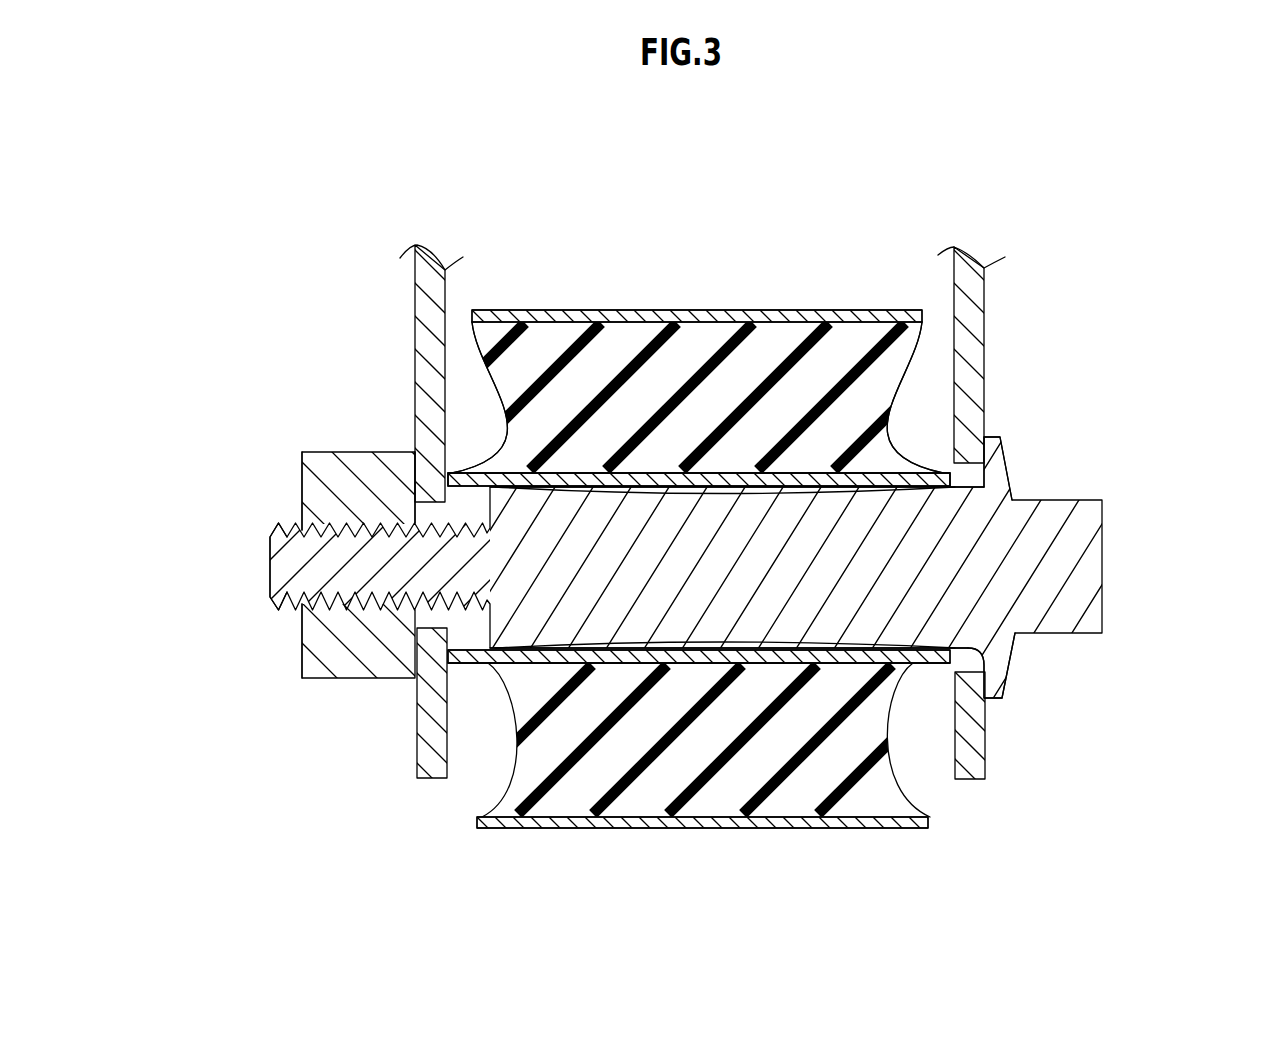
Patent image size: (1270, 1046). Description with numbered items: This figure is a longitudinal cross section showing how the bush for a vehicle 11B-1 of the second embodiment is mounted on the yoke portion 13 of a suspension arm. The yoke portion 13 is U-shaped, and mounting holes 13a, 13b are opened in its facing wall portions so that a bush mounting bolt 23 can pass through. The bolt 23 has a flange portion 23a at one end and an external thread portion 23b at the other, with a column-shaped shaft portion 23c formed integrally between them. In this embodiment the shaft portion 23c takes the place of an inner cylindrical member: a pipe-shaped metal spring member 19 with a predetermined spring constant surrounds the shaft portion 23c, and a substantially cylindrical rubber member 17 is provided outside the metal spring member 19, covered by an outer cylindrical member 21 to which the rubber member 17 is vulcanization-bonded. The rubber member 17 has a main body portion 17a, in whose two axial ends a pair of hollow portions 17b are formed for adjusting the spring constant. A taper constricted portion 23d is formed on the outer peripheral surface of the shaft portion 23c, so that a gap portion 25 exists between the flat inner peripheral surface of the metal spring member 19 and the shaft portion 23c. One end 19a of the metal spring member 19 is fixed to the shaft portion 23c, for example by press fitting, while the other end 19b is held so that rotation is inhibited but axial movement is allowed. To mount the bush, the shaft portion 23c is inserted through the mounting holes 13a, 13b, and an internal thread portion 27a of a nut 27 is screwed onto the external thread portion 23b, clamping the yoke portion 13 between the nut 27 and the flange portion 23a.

The bush for a vehicle 11B-1 is at (912, 155).
The yoke portion 13 is at (427, 357).
The mounting hole 13a is at (973, 470).
The mounting hole 13b is at (407, 517).
The rubber member 17 is at (630, 340).
The main body portion 17a is at (770, 350).
The hollow portion 17b is at (503, 412).
The metal spring member 19 is at (807, 473).
The one end of the metal spring member 19a is at (943, 470).
The other end of the metal spring member 19b is at (457, 467).
The outer cylindrical member 21 is at (743, 310).
The bush mounting bolt 23 is at (1087, 523).
The flange portion 23a is at (997, 683).
The external thread portion 23b is at (328, 572).
The shaft portion 23c is at (729, 578).
The taper constricted portion 23d is at (713, 640).
The gap portion 25 is at (717, 473).
The nut 27 is at (323, 467).
The internal thread portion 27a is at (302, 485).